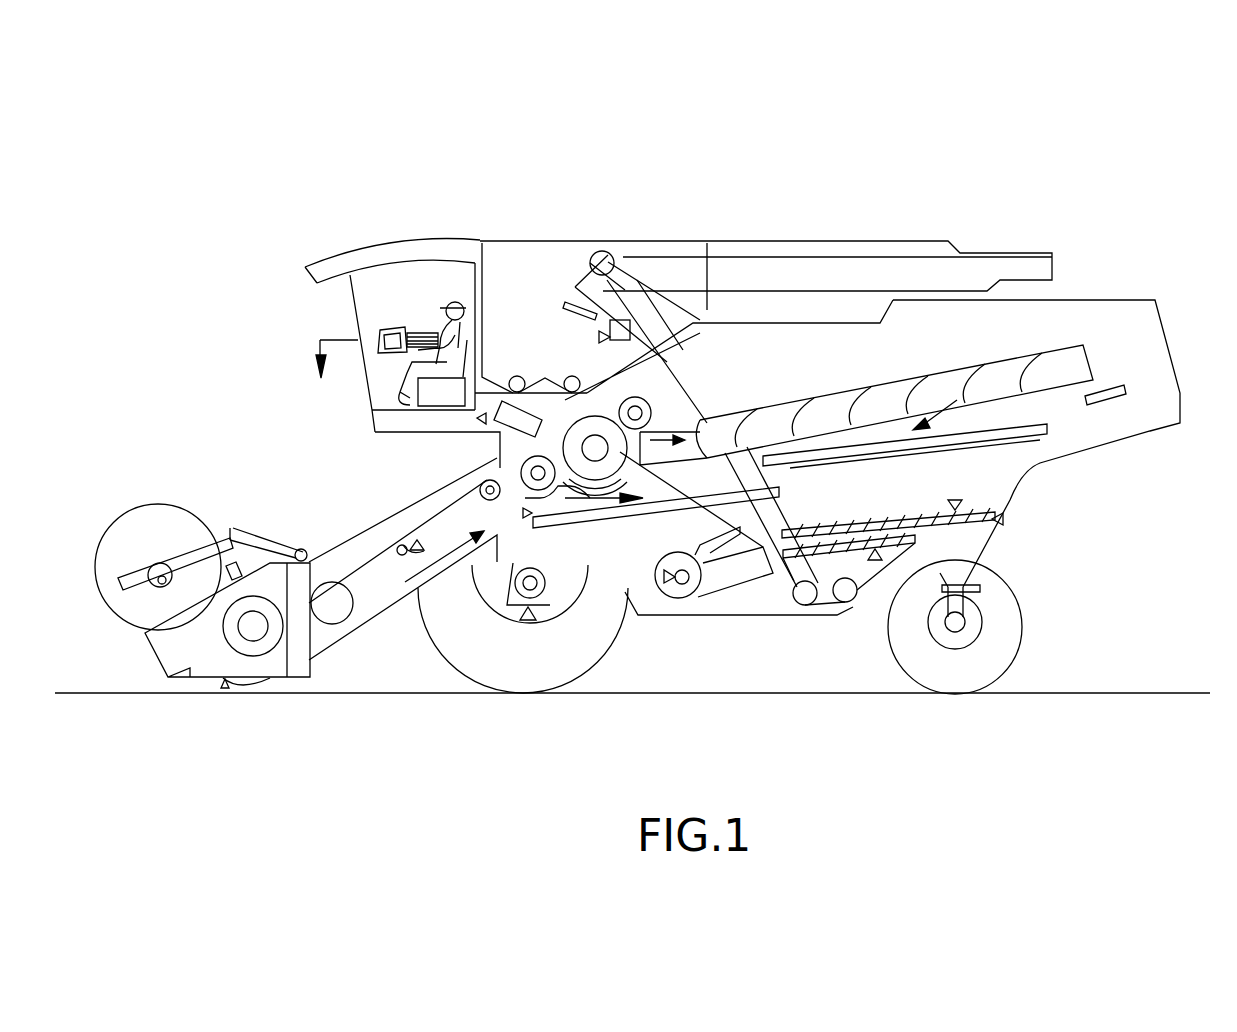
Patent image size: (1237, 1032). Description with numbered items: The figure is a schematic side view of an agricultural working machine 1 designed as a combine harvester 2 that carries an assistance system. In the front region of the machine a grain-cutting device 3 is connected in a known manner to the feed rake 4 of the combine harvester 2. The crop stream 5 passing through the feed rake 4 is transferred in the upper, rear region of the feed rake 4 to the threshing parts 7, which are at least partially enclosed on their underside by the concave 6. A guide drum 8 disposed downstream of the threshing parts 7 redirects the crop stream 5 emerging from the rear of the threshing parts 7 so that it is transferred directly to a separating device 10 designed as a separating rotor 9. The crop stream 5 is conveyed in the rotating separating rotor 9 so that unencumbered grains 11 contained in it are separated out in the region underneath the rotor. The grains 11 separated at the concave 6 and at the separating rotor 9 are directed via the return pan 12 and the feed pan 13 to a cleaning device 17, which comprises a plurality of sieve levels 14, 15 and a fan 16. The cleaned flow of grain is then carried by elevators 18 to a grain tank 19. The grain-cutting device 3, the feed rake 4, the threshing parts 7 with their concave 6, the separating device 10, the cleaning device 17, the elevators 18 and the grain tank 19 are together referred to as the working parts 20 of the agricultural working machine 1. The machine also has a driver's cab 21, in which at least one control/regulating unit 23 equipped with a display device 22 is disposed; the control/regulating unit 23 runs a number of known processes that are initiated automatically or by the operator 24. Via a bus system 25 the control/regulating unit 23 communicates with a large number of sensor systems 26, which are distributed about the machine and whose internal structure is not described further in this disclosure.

The agricultural working machine 1 is at (640, 453).
The combine harvester 2 is at (268, 293).
The grain-cutting device 3 is at (218, 486).
The feed rake 4 is at (350, 553).
The crop stream 5 is at (438, 566).
The concave 6 is at (567, 490).
The threshing parts 7 is at (598, 392).
The guide drum 8 is at (642, 381).
The separating rotor 9 is at (897, 351).
The separating device 10 is at (1073, 373).
The grains 11 is at (1000, 413).
The return pan 12 is at (1022, 440).
The feed pan 13 is at (745, 492).
The sieve level 14 is at (897, 542).
The sieve level 15 is at (942, 523).
The fan 16 is at (690, 580).
The cleaning device 17 is at (833, 568).
The elevators 18 is at (688, 388).
The grain tank 19 is at (530, 252).
The working parts 20 is at (637, 443).
The driver's cab 21 is at (407, 273).
The display device 22 is at (394, 334).
The control/regulating unit 23 is at (426, 305).
The operator 24 is at (456, 296).
The bus system 25 is at (320, 345).
The sensor systems 26 is at (225, 693).